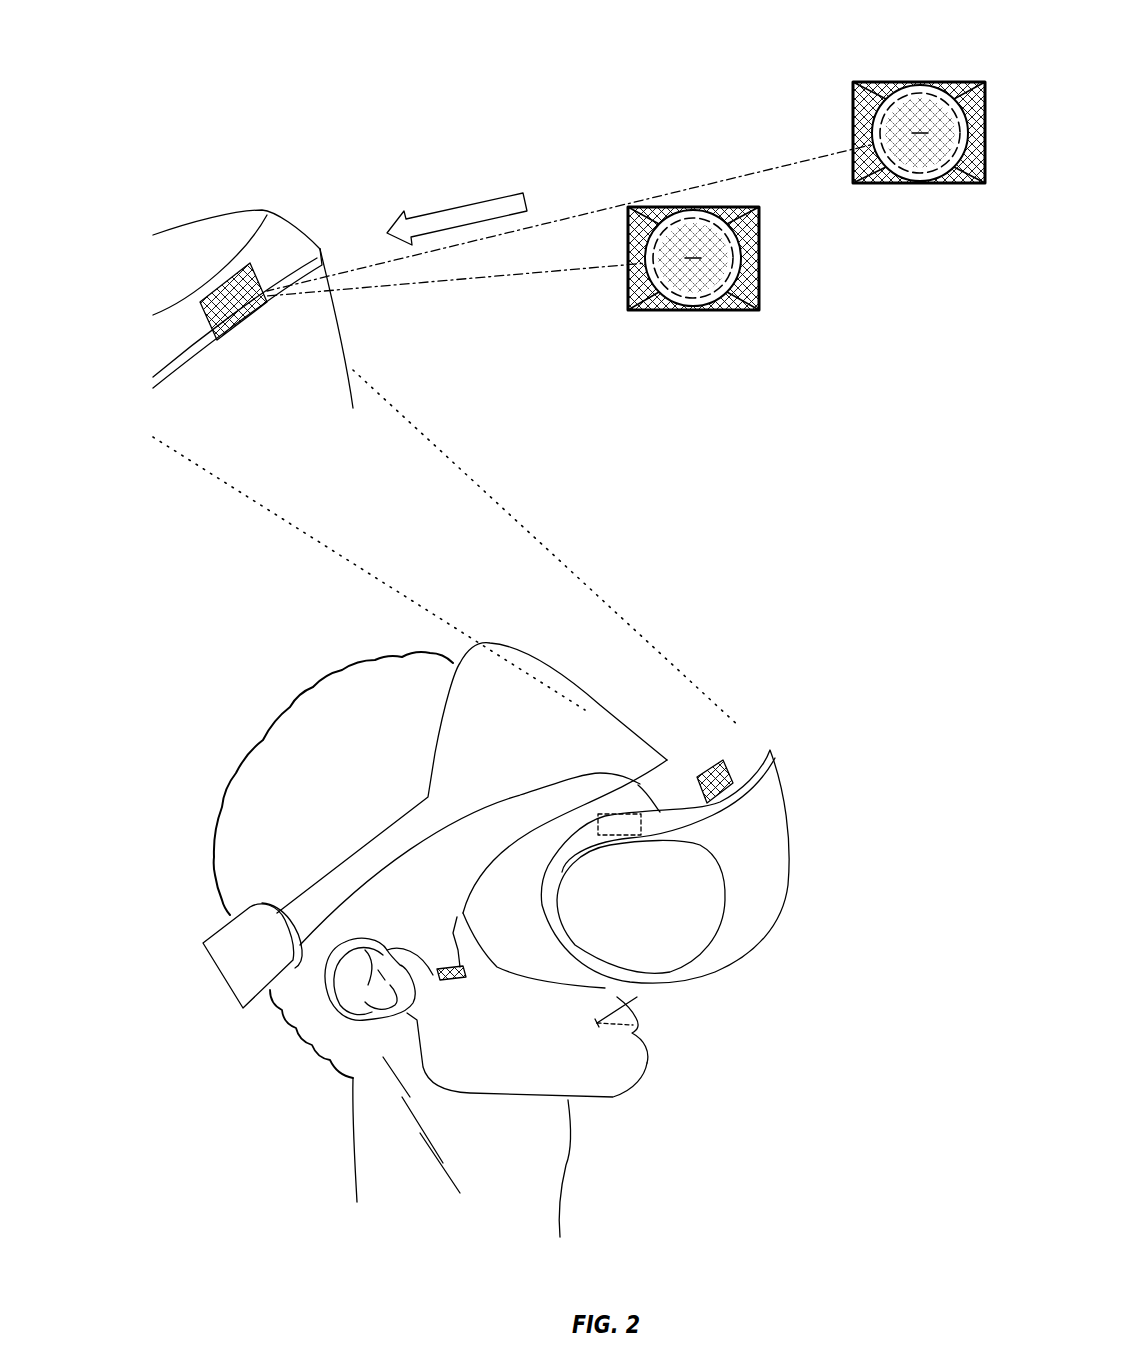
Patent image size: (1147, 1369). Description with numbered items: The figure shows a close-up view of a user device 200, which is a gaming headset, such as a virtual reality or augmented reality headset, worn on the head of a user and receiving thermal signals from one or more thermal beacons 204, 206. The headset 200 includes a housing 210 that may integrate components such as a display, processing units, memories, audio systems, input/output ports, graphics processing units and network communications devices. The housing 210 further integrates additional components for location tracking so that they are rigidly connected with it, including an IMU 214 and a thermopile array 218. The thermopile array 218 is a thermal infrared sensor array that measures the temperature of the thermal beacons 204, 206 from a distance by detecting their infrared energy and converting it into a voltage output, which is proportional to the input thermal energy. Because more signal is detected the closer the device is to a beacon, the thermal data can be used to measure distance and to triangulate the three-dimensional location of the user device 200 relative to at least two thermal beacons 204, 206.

The user device 200 is at (157, 921).
The thermal beacon 204 is at (759, 256).
The thermal beacon 206 is at (920, 82).
The housing 210 is at (583, 710).
The IMU 214 is at (655, 827).
The thermopile array 218 is at (707, 768).